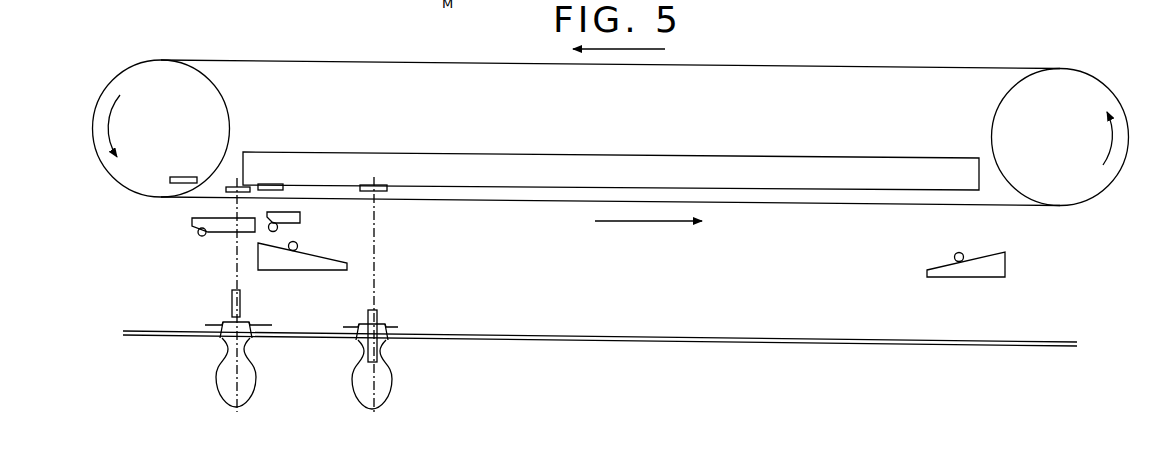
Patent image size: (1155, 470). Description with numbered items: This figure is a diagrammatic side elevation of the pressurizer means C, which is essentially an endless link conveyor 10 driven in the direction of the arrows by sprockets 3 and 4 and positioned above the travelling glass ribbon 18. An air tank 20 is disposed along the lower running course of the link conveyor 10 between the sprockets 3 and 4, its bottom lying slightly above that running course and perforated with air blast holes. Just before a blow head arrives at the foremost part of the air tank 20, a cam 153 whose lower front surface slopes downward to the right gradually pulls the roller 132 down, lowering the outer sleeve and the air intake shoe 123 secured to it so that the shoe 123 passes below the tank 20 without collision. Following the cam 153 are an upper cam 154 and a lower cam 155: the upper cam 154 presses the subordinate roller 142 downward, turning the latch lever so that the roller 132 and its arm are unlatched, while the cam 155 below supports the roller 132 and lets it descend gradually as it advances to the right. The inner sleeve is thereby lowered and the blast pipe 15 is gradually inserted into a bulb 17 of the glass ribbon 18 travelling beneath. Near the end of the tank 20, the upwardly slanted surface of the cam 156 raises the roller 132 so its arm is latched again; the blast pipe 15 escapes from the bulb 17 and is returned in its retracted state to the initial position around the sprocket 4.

The sprocket 3 is at (155, 66).
The sprocket 4 is at (1065, 68).
The link conveyor 10 is at (411, 63).
The pressurizer means C is at (308, 58).
The air tank 20 is at (670, 158).
The air intake shoe 123 is at (177, 176).
The cam 153 is at (190, 219).
The upper cam 154 is at (302, 216).
The subordinate roller 142 is at (279, 227).
The roller 132 is at (198, 235).
The lower cam 155 is at (287, 271).
The cam 156 is at (1006, 268).
The glass ribbon 18 is at (600, 336).
The blast pipe 15 is at (230, 304).
The bulb 17 is at (254, 372).